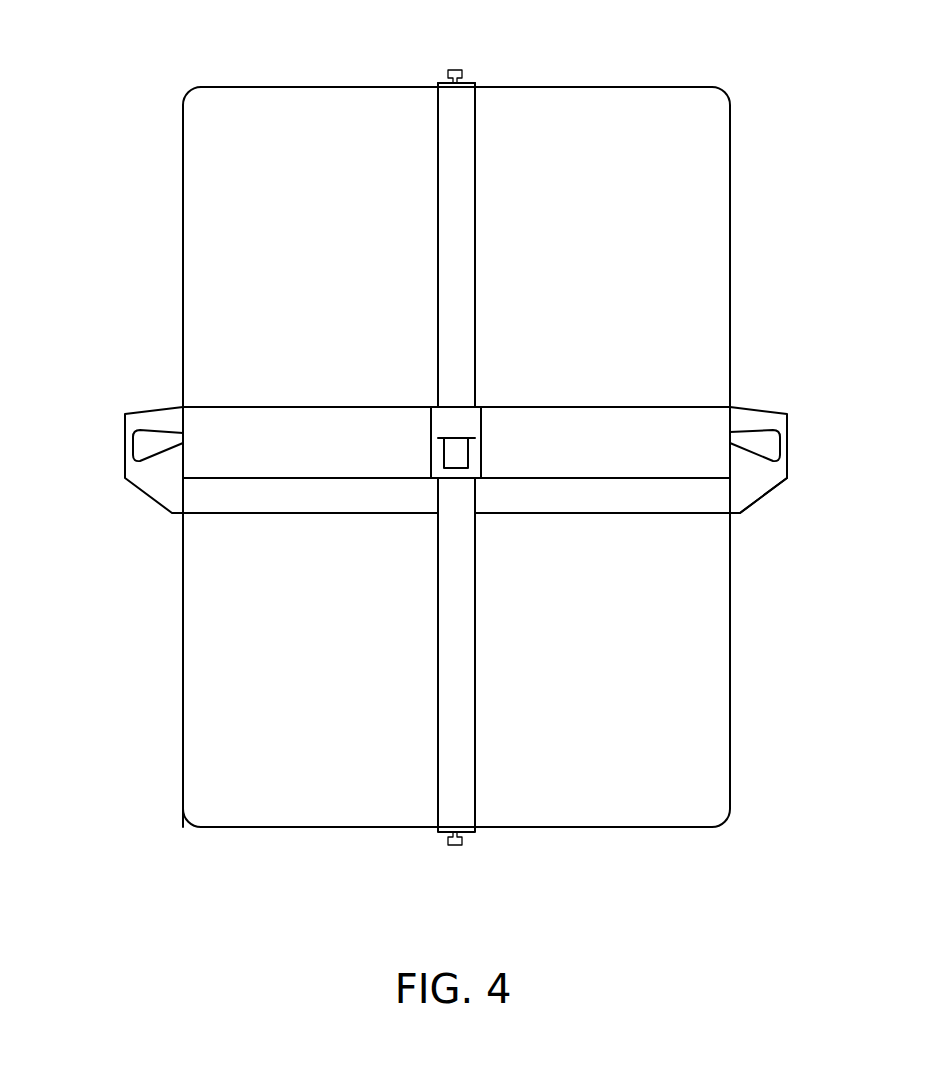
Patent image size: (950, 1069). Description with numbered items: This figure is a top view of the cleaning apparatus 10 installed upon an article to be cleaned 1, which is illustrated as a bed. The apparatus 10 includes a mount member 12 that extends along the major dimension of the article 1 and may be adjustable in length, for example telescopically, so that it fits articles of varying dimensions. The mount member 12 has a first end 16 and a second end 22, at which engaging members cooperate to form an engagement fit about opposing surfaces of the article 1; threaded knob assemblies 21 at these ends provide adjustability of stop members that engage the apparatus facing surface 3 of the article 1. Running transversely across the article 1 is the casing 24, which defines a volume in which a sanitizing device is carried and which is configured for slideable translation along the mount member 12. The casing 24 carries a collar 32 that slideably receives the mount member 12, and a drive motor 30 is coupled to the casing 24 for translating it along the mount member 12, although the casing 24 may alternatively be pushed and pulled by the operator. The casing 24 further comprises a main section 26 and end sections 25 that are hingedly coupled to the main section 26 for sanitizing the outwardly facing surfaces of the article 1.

The article to be cleaned 1 is at (730, 214).
The apparatus facing surface 3 is at (212, 792).
The cleaning apparatus 10 is at (763, 512).
The mount member 12 is at (476, 138).
The first end 16 is at (452, 798).
The threaded knob assembly 21 is at (453, 70).
The second end 22 is at (463, 83).
The casing 24 is at (243, 400).
The end sections 25 is at (125, 452).
The main section 26 is at (260, 455).
The drive motor 30 is at (457, 420).
The collar 32 is at (475, 448).